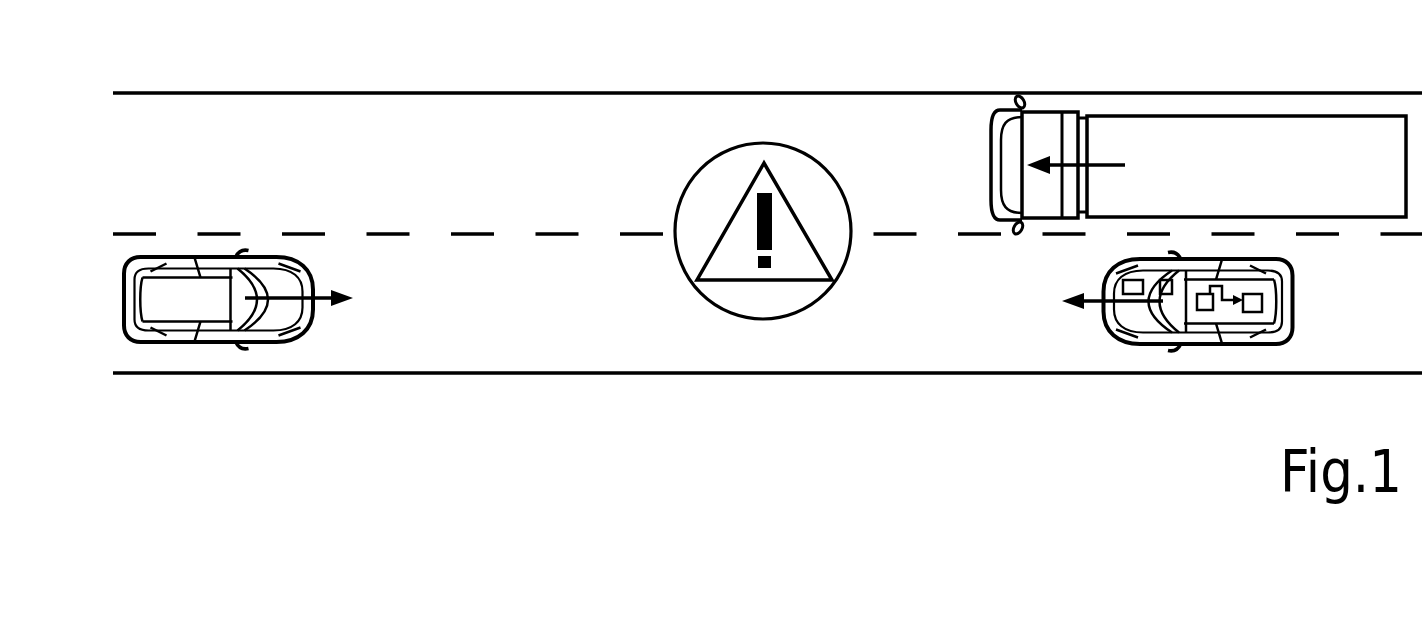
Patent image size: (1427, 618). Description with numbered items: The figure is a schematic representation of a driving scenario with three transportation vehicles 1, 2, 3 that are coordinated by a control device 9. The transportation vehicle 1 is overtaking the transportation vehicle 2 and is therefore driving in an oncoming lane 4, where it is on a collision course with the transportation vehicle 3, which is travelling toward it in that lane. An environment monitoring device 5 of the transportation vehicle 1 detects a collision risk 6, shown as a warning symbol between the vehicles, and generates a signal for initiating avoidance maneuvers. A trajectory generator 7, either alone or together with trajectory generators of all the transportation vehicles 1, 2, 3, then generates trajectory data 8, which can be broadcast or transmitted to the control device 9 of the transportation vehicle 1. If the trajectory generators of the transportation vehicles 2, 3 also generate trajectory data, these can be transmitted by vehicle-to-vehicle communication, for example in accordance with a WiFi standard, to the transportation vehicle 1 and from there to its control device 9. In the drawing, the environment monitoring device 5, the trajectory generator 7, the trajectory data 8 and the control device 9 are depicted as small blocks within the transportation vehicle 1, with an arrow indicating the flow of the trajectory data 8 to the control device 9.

The transportation vehicle 1 is at (1192, 317).
The transportation vehicle 2 is at (1157, 178).
The transportation vehicle 3 is at (188, 311).
The oncoming lane 4 is at (942, 333).
The environment monitoring device 5 is at (1118, 342).
The collision risk 6 is at (778, 143).
The trajectory generator 7 is at (1158, 342).
The trajectory data 8 is at (1205, 312).
The control device 9 is at (1252, 313).